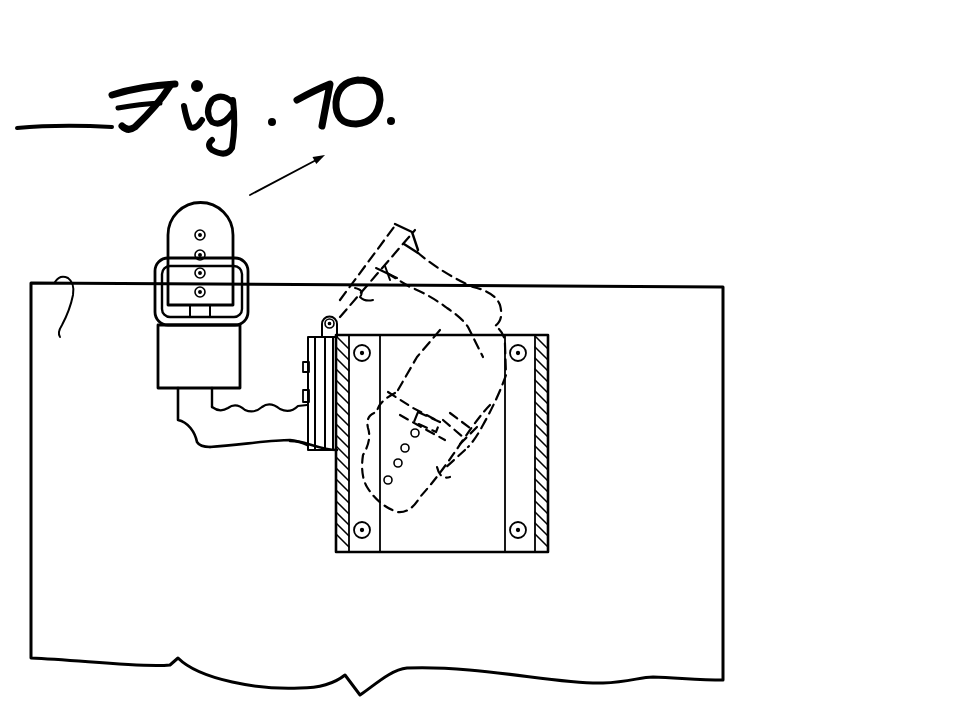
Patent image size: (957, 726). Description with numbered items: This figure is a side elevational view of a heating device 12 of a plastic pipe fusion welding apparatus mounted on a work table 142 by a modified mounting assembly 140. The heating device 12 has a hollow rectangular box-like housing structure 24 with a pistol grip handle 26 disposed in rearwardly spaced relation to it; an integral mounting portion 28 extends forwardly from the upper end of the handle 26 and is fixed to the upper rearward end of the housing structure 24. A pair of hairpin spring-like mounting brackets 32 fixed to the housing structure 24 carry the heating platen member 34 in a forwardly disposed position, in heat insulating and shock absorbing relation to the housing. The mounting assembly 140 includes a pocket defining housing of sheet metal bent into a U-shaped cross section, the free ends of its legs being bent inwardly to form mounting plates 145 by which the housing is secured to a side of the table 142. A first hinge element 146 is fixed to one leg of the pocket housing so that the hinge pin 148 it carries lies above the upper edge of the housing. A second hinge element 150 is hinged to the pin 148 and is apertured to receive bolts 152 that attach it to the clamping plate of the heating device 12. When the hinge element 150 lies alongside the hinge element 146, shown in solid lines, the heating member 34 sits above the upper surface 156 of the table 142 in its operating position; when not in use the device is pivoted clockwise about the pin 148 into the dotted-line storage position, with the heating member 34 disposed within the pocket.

The heating device 12 is at (170, 404).
The housing structure 24 is at (173, 375).
The pistol grip handle 26 is at (215, 432).
The mounting portion 28 is at (203, 402).
The mounting brackets 32 is at (248, 277).
The heating platen member 34 is at (190, 213).
The mounting assembly 140 is at (556, 368).
The work table 142 is at (712, 415).
The mounting plates 145 is at (520, 511).
The first hinge element 146 is at (297, 453).
The hinge pin 148 is at (334, 308).
The second hinge element 150 is at (310, 388).
The bolts 152 is at (305, 361).
The upper surface 156 is at (89, 318).